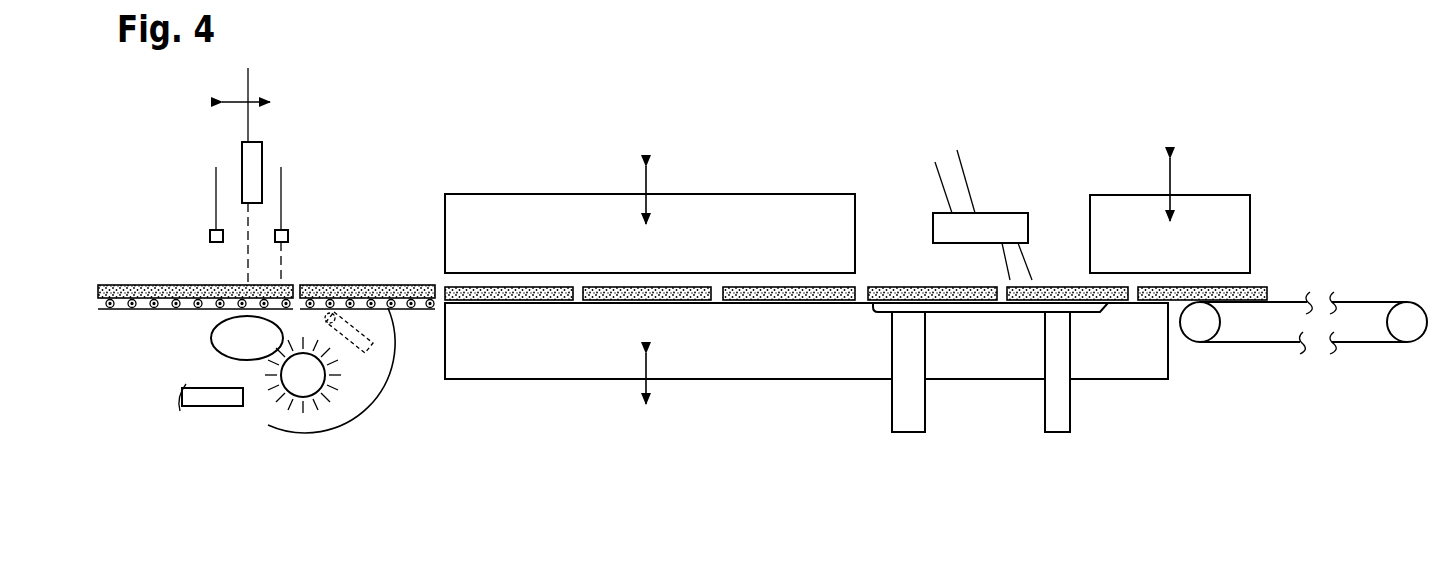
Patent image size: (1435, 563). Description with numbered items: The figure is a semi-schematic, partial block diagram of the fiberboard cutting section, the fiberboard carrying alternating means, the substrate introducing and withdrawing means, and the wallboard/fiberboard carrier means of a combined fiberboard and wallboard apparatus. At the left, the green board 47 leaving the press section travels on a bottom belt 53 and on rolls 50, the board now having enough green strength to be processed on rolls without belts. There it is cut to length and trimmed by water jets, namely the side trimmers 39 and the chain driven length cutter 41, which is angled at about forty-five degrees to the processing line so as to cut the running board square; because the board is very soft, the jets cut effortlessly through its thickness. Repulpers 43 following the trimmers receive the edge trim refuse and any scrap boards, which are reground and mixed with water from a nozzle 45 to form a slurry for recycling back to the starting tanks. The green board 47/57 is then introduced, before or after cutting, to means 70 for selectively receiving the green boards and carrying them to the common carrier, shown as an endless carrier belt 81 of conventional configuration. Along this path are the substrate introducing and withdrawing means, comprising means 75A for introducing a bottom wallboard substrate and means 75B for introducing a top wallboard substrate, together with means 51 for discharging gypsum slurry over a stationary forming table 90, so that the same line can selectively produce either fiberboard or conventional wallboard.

The side trimmers 39 is at (216, 212).
The chain driven length cutter 41 is at (262, 158).
The repulpers 43 is at (373, 355).
The nozzle 45 is at (223, 406).
The green board 47 is at (185, 300).
The rolls 50 is at (168, 310).
The slurry discharging means 51 is at (975, 190).
The bottom belt 53 is at (145, 310).
The green board 57 is at (402, 285).
The means for selectively receiving green boards 70 is at (782, 380).
The bottom wallboard substrate introducing means 75A is at (765, 194).
The top wallboard substrate introducing means 75B is at (1113, 195).
The endless carrier belt 81 is at (1278, 342).
The stationary forming table 90 is at (1012, 312).